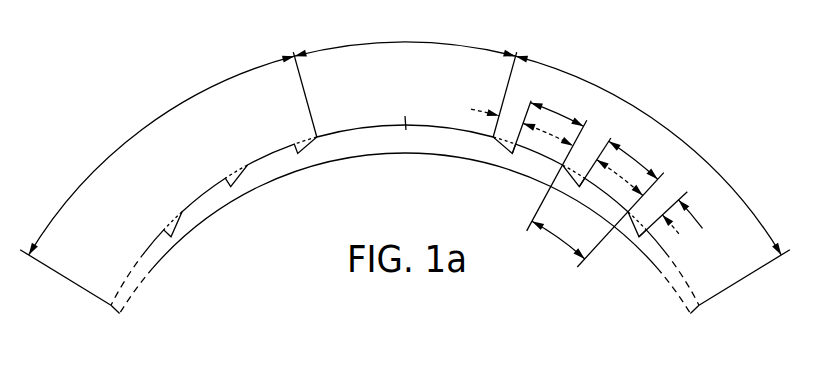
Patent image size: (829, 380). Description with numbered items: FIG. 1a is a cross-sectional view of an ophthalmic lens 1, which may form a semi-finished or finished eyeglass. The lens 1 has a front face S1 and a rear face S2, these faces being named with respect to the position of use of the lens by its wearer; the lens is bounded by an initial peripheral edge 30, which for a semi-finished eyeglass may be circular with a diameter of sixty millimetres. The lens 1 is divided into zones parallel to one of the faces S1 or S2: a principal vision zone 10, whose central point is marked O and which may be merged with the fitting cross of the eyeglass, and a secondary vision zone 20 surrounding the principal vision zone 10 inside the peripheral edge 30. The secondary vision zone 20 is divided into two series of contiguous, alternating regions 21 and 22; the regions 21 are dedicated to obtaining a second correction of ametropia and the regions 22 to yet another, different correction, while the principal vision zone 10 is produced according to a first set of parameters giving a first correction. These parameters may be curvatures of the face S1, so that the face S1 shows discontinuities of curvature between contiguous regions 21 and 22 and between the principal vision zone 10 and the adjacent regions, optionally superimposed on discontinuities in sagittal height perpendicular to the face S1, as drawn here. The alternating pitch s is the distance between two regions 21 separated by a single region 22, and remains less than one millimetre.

The ophthalmic lens 1 is at (301, 214).
The principal vision zone 10 is at (404, 79).
The secondary vision zone 20 is at (405, 180).
The regions of the first series 21 is at (623, 163).
The regions of the second series 22 is at (576, 182).
The initial peripheral edge 30 is at (693, 313).
The front face S1 is at (462, 127).
The rear face S2 is at (462, 161).
The alternating pitch s is at (558, 242).
The central point of the principal vision zone O is at (405, 122).